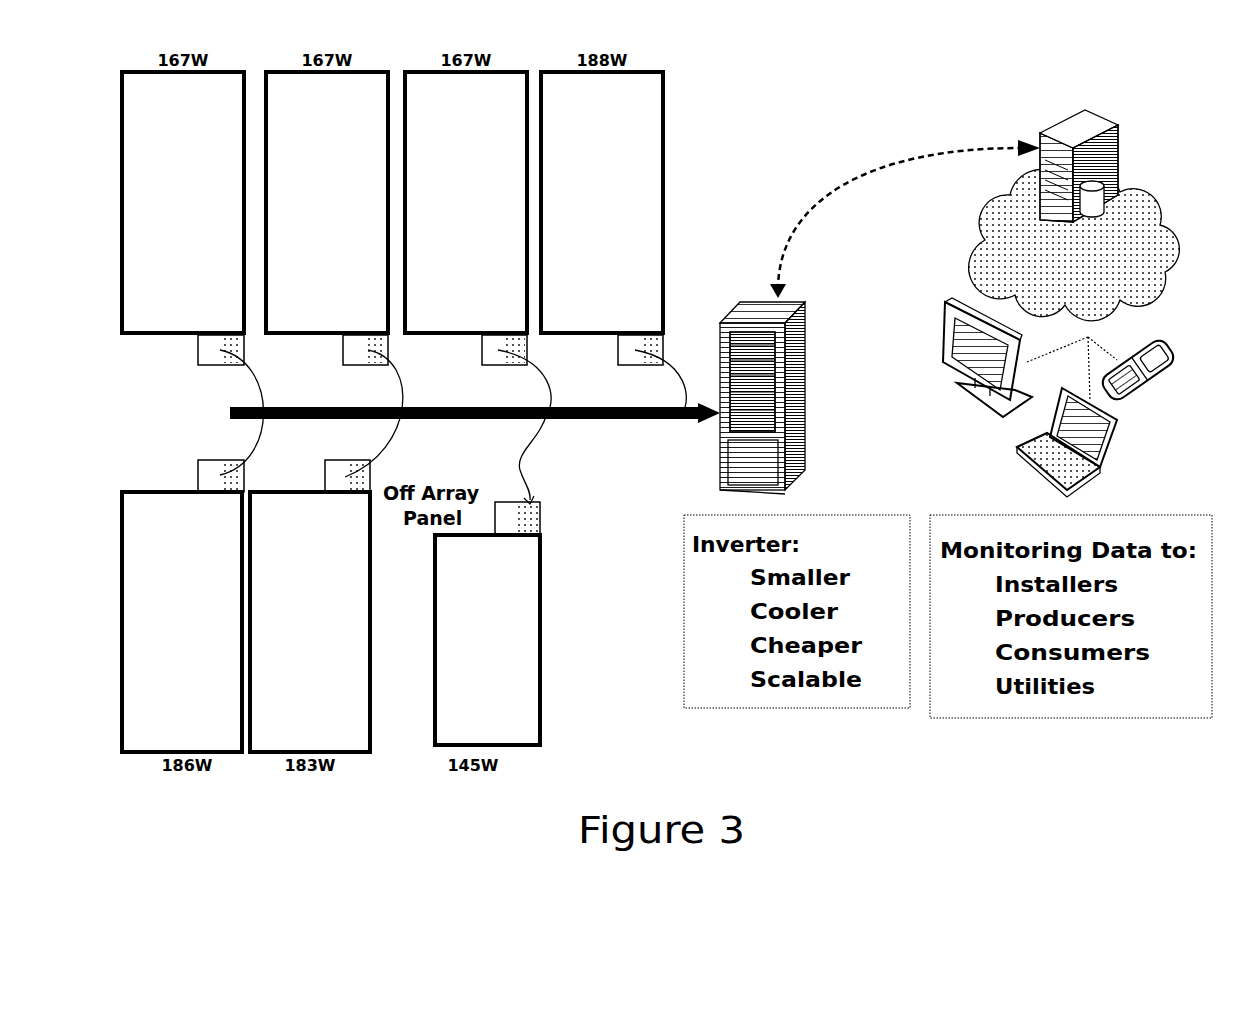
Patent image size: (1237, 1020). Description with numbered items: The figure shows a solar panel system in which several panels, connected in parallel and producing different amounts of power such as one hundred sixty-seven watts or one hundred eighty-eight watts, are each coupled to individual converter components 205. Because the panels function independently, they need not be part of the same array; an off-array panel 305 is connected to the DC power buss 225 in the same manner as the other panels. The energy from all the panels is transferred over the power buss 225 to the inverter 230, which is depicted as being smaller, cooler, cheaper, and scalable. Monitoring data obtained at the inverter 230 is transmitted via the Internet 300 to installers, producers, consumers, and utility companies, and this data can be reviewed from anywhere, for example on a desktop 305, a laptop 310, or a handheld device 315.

The converter component 205 is at (197, 357).
The DC power buss 225 is at (583, 420).
The inverter 230 is at (807, 318).
The Internet 300 is at (1134, 192).
The desktop 305 is at (540, 636).
The laptop 310 is at (1110, 450).
The handheld device 315 is at (1143, 386).